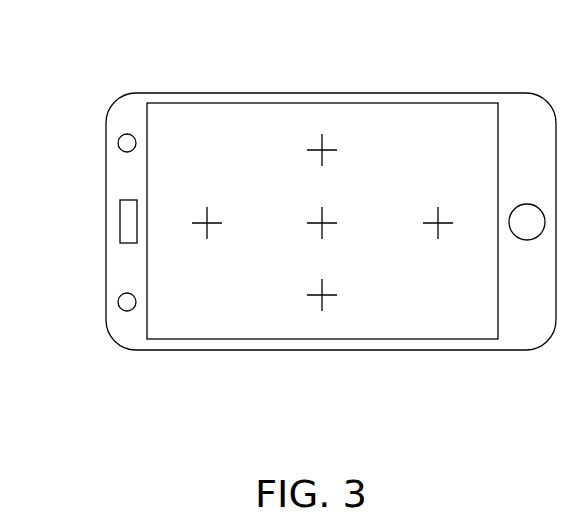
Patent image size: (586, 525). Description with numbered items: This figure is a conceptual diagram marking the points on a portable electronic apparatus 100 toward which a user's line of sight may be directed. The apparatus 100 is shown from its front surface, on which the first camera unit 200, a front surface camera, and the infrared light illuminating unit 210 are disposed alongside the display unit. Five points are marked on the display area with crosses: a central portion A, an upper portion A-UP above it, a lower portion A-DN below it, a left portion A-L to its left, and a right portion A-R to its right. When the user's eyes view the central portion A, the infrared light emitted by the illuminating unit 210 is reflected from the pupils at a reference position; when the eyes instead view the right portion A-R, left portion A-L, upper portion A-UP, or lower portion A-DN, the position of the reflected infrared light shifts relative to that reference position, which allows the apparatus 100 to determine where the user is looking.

The portable electronic apparatus 100 is at (505, 92).
The first camera unit 200 is at (118, 143).
The infrared light illuminating unit 210 is at (118, 302).
The central portion A is at (325, 220).
The upper portion A-UP is at (320, 140).
The lower portion A-DN is at (320, 298).
The left portion A-L is at (207, 238).
The right portion A-R is at (438, 238).